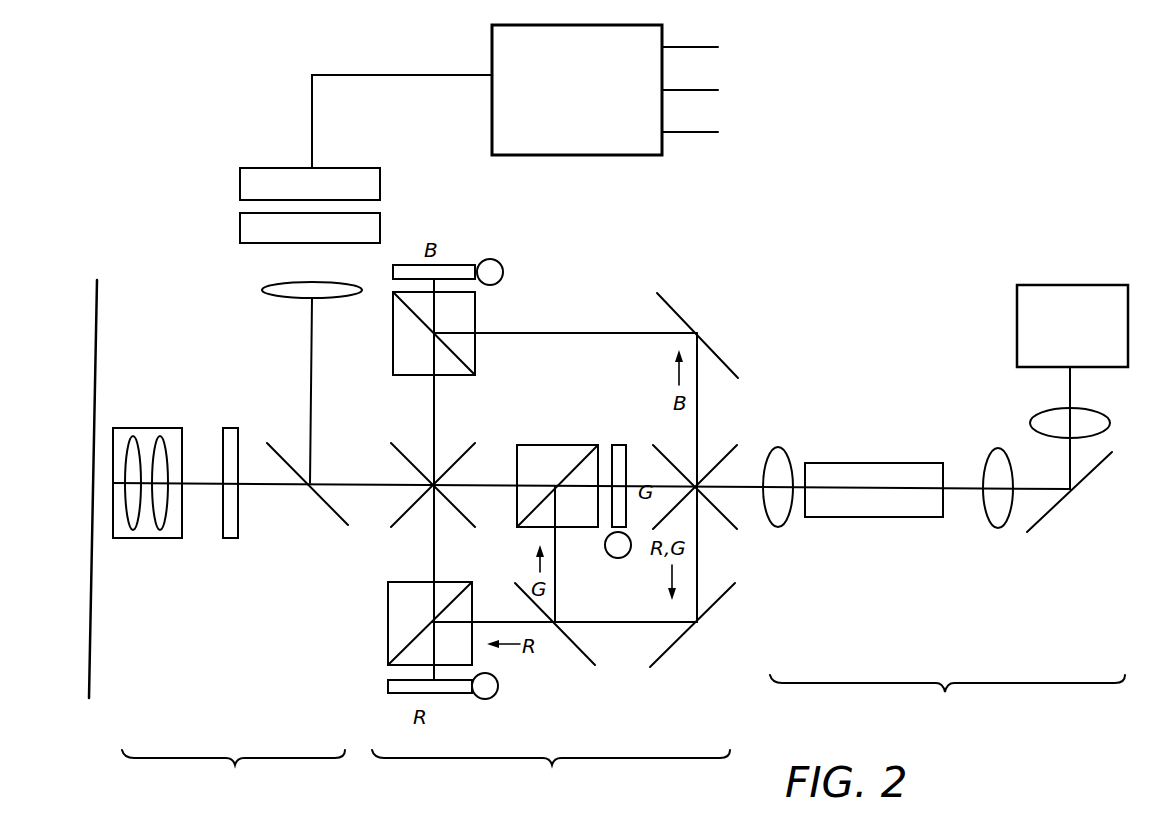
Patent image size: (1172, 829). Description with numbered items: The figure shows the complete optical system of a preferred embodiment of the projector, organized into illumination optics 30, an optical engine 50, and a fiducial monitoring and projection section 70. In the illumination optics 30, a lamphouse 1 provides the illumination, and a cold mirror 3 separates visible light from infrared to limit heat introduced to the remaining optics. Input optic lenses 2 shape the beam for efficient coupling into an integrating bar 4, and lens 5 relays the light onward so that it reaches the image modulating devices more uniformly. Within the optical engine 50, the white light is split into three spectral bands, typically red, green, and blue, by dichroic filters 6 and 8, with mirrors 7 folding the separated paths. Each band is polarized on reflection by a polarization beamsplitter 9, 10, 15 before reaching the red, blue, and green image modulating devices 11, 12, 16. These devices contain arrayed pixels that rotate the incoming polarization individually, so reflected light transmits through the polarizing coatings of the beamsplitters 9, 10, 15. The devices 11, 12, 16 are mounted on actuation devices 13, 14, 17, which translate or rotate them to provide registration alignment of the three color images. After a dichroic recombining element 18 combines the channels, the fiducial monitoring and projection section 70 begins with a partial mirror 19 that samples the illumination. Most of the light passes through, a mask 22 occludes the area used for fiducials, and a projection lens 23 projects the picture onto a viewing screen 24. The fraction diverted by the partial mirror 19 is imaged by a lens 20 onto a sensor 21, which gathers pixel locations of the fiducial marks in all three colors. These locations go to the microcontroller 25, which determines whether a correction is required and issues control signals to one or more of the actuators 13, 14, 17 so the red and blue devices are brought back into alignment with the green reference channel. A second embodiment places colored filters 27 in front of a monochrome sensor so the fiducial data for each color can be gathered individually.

The lamphouse 1 is at (1034, 285).
The input optic lenses 2 is at (990, 465).
The cold mirror 3 is at (1048, 510).
The integrating bar 4 is at (846, 463).
The lens 5 is at (784, 512).
The dichroic filter 6 is at (720, 455).
The mirrors 7 is at (672, 305).
The dichroic filter 8 is at (578, 655).
The polarization beamsplitter 9 is at (392, 617).
The polarization beamsplitter 10 is at (400, 333).
The image modulating device 11 is at (388, 687).
The image modulating device 12 is at (393, 270).
The actuation device 13 is at (492, 697).
The actuation device 14 is at (500, 263).
The polarization beamsplitter 15 is at (534, 447).
The image modulating device 16 is at (618, 445).
The actuation device 17 is at (612, 558).
The dichroic recombining element 18 is at (396, 451).
The partial mirror 19 is at (335, 514).
The lens 20 is at (262, 290).
The sensor 21 is at (257, 168).
The mask 22 is at (230, 540).
The projection lens 23 is at (152, 540).
The viewing screen 24 is at (92, 648).
The microcontroller 25 is at (492, 58).
The colored filters 27 is at (240, 233).
The illumination optics 30 is at (947, 701).
The optical engine 50 is at (551, 778).
The fiducial monitoring and projection section 70 is at (233, 777).